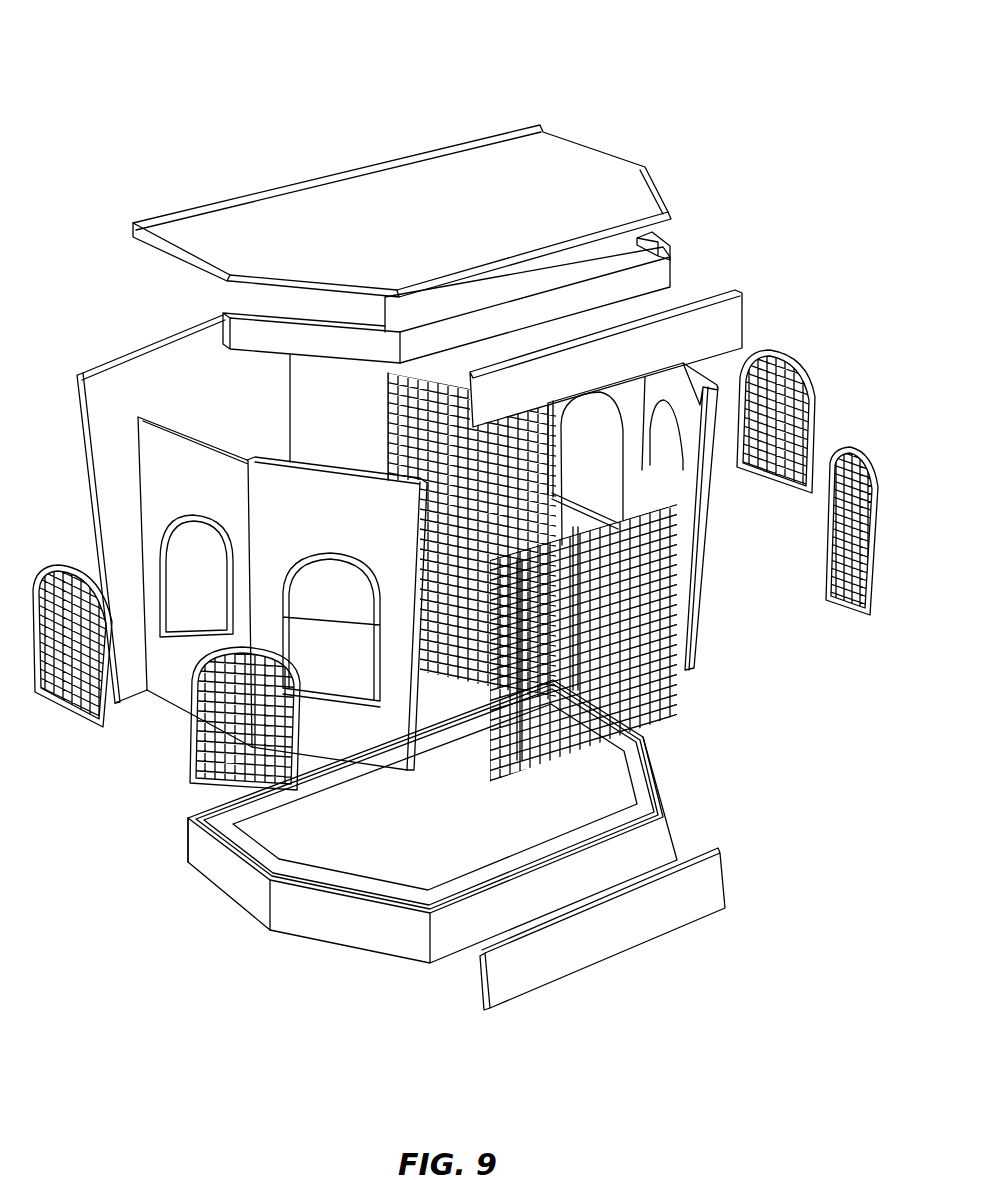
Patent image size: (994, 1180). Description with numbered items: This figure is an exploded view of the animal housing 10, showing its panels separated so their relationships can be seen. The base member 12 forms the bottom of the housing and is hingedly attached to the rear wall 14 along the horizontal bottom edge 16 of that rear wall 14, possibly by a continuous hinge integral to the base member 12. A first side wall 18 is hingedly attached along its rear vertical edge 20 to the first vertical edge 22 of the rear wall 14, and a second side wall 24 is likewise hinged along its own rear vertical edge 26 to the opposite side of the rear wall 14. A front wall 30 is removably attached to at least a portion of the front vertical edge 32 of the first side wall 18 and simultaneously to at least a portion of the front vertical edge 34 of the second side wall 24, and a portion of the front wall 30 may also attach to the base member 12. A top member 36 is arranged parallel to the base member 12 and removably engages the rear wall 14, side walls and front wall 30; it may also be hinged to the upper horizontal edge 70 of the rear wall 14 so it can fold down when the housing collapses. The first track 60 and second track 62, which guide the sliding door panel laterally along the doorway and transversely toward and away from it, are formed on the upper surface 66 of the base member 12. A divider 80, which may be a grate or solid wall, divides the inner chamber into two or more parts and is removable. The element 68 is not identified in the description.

The animal housing 10 is at (115, 45).
The base member 12 is at (425, 827).
The rear wall 14 is at (151, 500).
The horizontal bottom edge 16 is at (185, 860).
The first side wall 18 is at (143, 500).
The rear vertical edge 20 is at (140, 590).
The first vertical edge 22 is at (78, 430).
The second side wall 24 is at (623, 323).
The rear vertical edge 26 is at (537, 345).
The front wall 30 is at (597, 952).
The front vertical edge 32 is at (425, 765).
The front vertical edge 34 is at (693, 648).
The top member 36 is at (312, 207).
The first track 60 is at (382, 372).
The second track 62 is at (657, 790).
The upper surface 66 is at (322, 848).
The bracket 68 is at (668, 248).
The upper horizontal edge 70 is at (178, 338).
The divider 80 is at (388, 455).